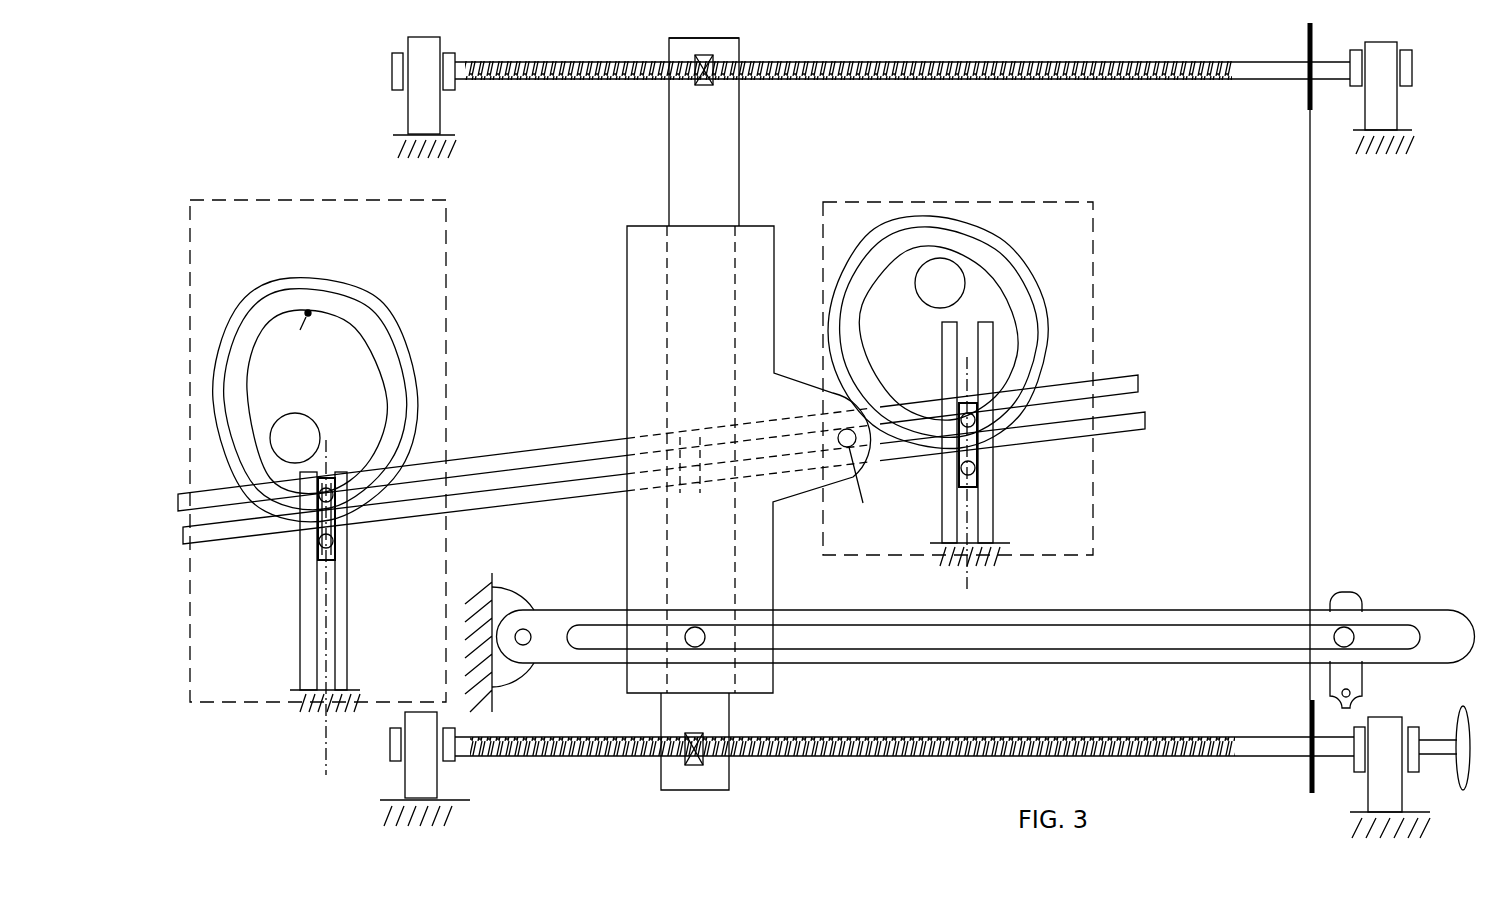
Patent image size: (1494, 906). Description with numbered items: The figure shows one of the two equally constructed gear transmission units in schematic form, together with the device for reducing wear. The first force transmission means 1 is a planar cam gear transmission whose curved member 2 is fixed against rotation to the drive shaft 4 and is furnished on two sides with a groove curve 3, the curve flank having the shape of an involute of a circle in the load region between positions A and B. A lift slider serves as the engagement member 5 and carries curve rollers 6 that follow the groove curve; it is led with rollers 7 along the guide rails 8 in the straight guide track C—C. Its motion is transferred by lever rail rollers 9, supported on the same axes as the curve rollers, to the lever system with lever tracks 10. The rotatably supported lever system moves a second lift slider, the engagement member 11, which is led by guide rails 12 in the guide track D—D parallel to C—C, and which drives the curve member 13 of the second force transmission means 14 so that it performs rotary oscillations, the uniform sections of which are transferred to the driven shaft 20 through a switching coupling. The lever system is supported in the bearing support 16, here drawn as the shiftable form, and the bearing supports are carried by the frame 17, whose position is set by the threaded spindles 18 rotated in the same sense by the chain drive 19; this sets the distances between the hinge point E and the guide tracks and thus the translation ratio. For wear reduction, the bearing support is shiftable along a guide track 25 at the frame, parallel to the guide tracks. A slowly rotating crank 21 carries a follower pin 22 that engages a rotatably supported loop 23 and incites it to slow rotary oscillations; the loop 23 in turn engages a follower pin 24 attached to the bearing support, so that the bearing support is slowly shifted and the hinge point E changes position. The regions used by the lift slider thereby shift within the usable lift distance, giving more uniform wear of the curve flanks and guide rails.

The first force transmission means 1 is at (450, 226).
The curved member 2 is at (374, 308).
The groove curve 3 is at (388, 365).
The drive shaft 4 is at (290, 430).
The engagement member 5 is at (345, 530).
The curve rollers 6 is at (351, 480).
The rollers 7 is at (318, 542).
The guide rails 8 is at (308, 630).
The lever rail rollers 9 is at (349, 519).
The lever tracks 10 is at (562, 488).
The engagement member 11 is at (977, 450).
The guide rails 12 is at (943, 525).
The curve member 13 is at (1038, 304).
The second force transmission means 14 is at (1097, 224).
The bearing support 16 is at (720, 414).
The frame 17 is at (688, 133).
The threaded spindles 18 is at (822, 82).
The chain drive 19 is at (1308, 97).
The driven shaft 20 is at (945, 275).
The crank 21 is at (1356, 681).
The follower pin 22 is at (1347, 633).
The loop 23 is at (1185, 622).
The follower pin 24 is at (695, 627).
The guide track 25 is at (627, 132).